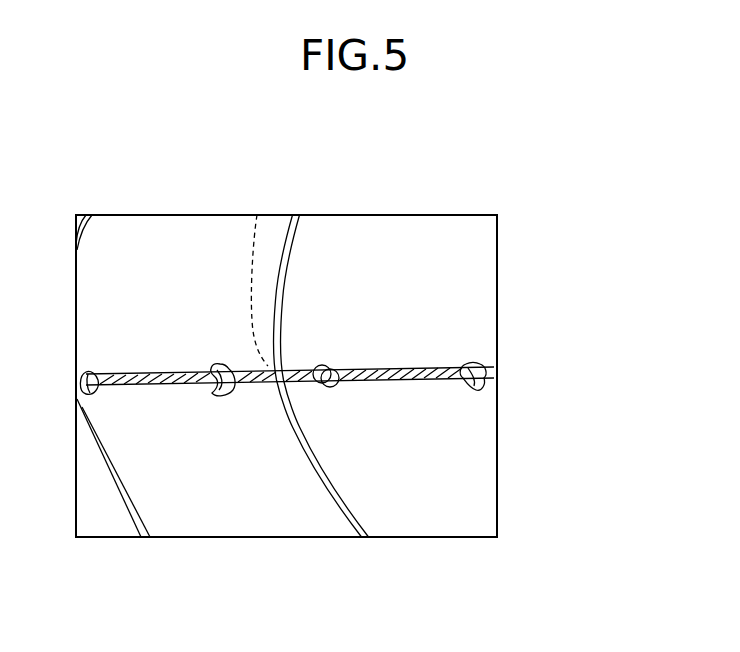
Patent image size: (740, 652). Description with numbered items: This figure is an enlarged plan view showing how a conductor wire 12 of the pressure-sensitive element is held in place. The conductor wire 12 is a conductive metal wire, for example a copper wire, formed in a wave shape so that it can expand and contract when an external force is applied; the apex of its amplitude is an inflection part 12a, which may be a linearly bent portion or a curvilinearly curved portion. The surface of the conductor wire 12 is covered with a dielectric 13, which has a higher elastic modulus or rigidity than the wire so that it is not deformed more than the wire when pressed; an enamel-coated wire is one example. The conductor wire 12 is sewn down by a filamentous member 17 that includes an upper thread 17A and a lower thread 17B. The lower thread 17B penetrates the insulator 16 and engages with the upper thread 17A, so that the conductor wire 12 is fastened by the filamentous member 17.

The conductor wire 12 is at (323, 334).
The dielectric 13 is at (300, 215).
The inflection part 12a is at (257, 215).
The insulator 16 is at (476, 503).
The filamentous member 17 is at (366, 343).
The upper thread 17A is at (434, 366).
The lower thread 17B is at (480, 365).